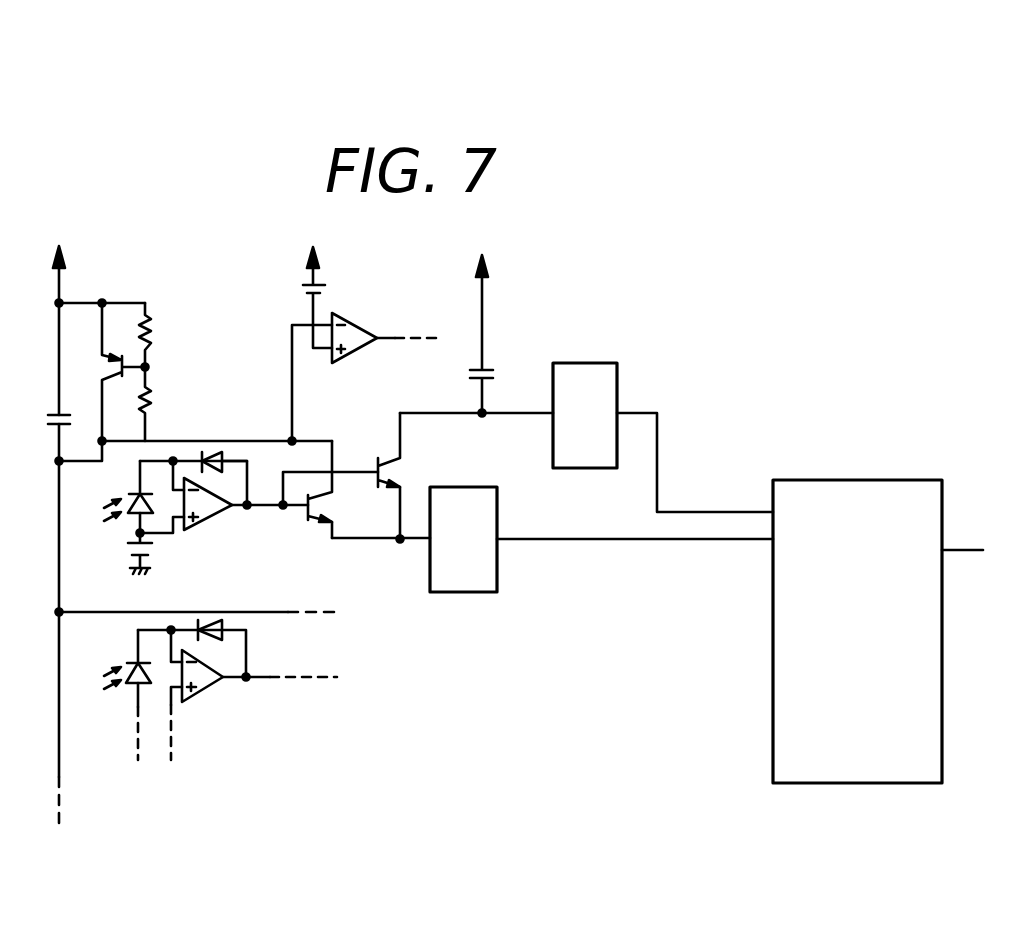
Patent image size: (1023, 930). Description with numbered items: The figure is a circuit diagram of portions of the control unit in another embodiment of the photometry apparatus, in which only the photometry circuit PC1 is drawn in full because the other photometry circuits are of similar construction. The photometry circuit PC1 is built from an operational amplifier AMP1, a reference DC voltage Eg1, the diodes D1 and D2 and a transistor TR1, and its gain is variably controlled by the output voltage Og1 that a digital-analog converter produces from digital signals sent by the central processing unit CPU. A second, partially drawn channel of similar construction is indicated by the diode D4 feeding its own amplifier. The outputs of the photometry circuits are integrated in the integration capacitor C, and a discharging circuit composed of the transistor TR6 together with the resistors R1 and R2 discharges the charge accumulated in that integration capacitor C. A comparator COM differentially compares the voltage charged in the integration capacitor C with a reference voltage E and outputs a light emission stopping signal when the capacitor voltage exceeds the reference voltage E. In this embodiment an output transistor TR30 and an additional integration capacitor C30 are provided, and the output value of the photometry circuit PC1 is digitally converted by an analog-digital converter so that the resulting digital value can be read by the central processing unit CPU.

The integration capacitor C is at (51, 402).
The resistor R1 is at (161, 335).
The resistor R2 is at (161, 404).
The transistor TR6 is at (103, 372).
The reference voltage E is at (309, 297).
The comparator COM is at (384, 343).
The diode D2 is at (125, 497).
The reference DC voltage Eg1 is at (118, 556).
The operational amplifier AMP1 is at (215, 518).
The diode D1 is at (224, 478).
The transistor TR1 is at (307, 495).
The output voltage Og1 is at (307, 558).
The output transistor TR30 is at (418, 476).
The integration capacitor C30 is at (500, 334).
The central processing unit CPU is at (878, 631).
The photometry circuit PC1 is at (374, 589).
The diode D4 is at (124, 695).